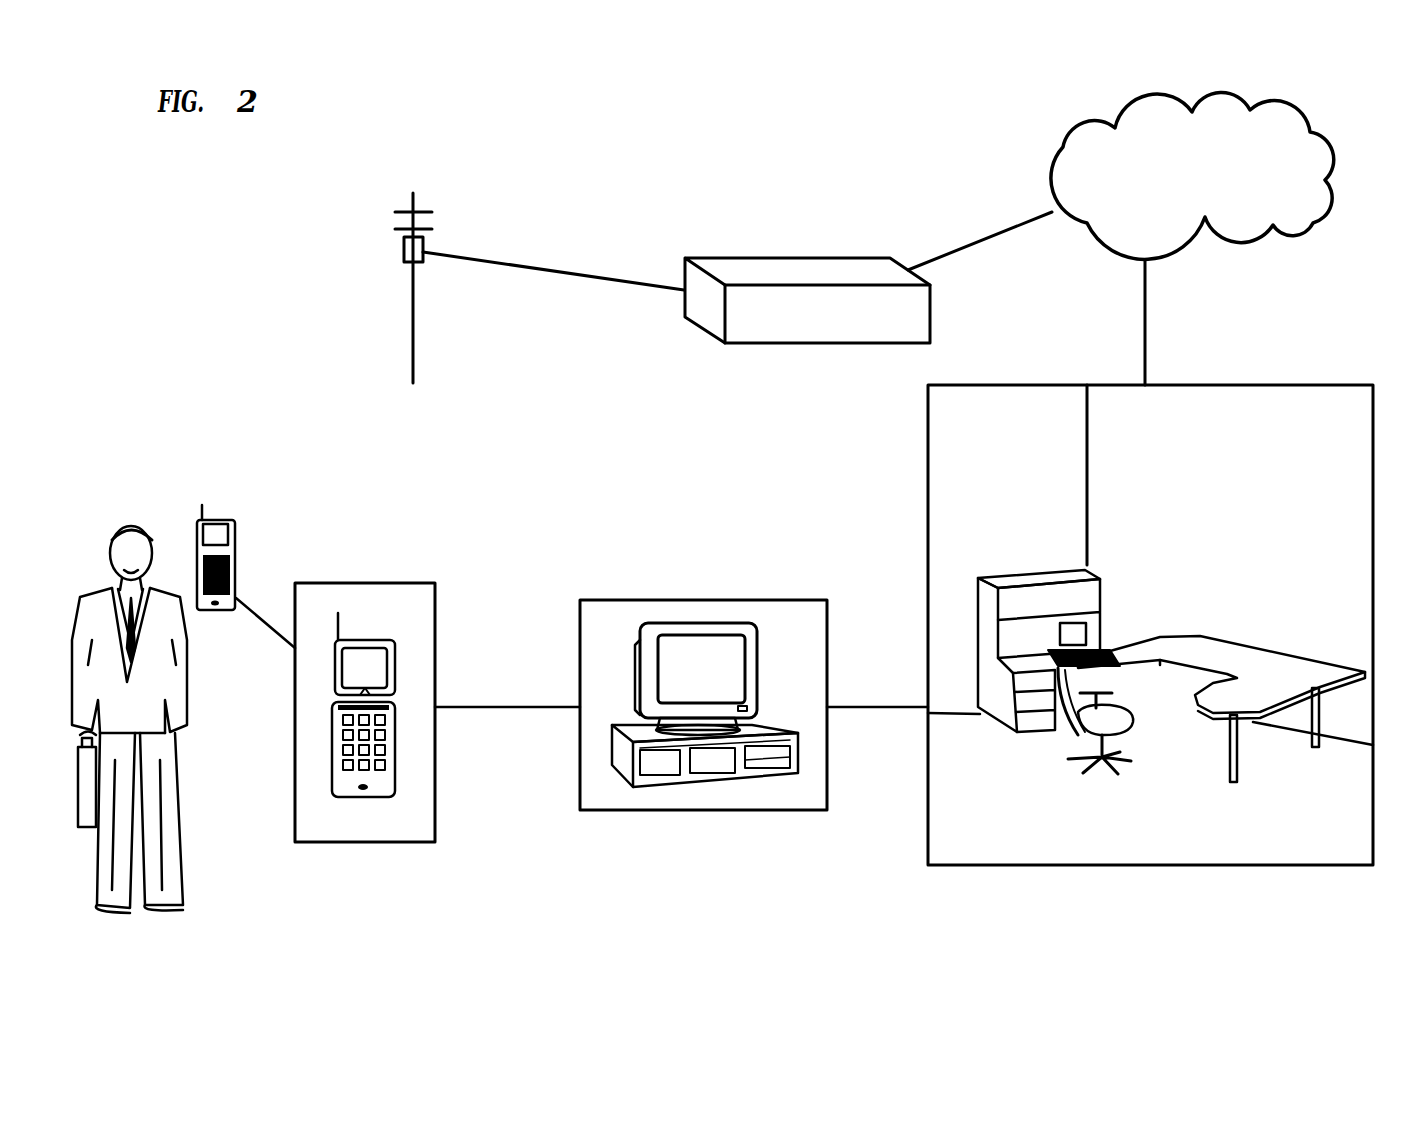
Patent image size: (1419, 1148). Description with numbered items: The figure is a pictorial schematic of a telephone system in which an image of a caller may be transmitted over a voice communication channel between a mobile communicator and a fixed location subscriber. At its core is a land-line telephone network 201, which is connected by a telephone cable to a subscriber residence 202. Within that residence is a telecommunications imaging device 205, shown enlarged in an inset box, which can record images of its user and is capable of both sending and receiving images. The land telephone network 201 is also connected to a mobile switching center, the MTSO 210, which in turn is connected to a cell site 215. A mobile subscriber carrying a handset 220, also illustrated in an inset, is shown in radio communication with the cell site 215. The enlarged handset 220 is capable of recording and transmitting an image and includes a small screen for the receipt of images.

The land-line telephone network 201 is at (1293, 112).
The subscriber residence 202 is at (1310, 389).
The telecommunications imaging device 205 is at (788, 602).
The mobile switching center (MTSO) 210 is at (865, 257).
The cell site 215 is at (400, 250).
The handset 220 is at (400, 586).